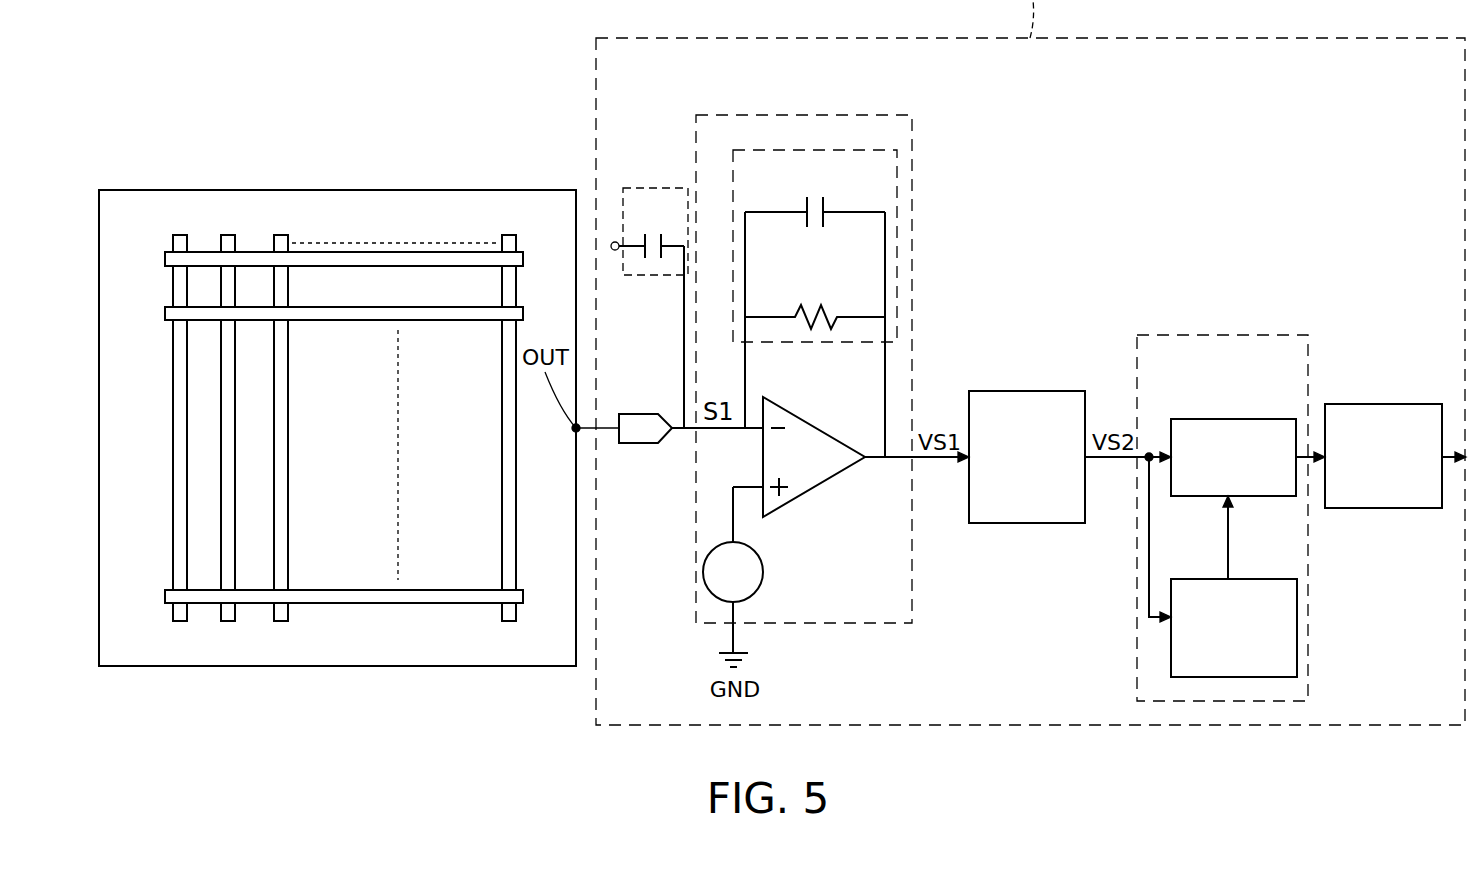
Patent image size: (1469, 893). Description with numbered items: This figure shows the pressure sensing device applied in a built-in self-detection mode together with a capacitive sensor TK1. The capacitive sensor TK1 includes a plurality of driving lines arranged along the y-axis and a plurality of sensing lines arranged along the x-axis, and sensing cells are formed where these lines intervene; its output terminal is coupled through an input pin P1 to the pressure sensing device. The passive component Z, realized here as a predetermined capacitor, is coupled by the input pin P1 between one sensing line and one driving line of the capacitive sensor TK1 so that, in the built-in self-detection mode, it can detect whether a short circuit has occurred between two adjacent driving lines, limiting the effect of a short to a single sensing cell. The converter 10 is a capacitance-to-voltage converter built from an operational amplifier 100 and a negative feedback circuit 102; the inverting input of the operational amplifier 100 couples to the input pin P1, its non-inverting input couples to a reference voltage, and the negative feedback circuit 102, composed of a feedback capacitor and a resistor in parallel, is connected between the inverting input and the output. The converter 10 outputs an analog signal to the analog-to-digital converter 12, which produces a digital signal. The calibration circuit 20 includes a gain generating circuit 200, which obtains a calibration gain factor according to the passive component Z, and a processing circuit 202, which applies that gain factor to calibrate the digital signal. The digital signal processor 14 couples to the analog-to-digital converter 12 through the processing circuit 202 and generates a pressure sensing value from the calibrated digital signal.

The capacitive sensor TK1 is at (337, 189).
The passive component Z is at (650, 188).
The input pin P1 is at (651, 413).
The converter 10 is at (797, 115).
The operational amplifier 100 is at (815, 490).
The negative feedback circuit 102 is at (897, 243).
The analog-to-digital converter 12 is at (1027, 390).
The digital signal processor 14 is at (1375, 404).
The calibration circuit 20 is at (1218, 335).
The gain generating circuit 200 is at (1190, 578).
The processing circuit 202 is at (1227, 418).